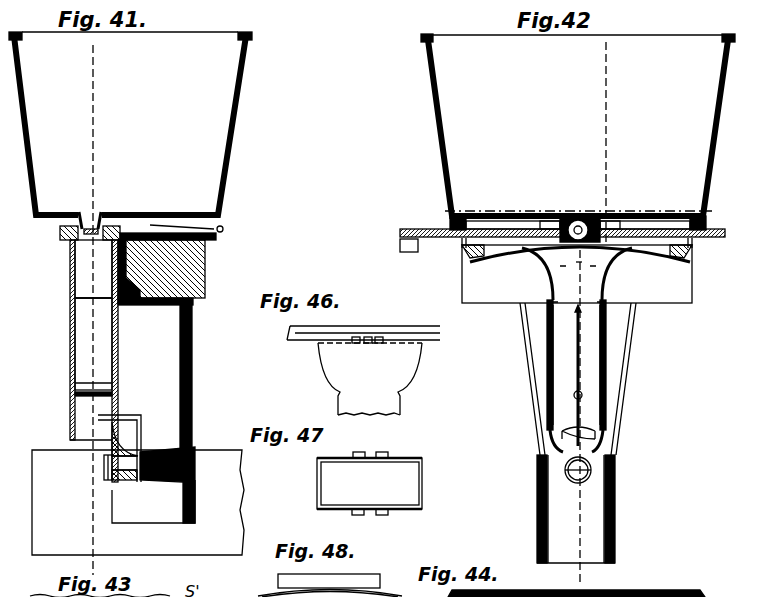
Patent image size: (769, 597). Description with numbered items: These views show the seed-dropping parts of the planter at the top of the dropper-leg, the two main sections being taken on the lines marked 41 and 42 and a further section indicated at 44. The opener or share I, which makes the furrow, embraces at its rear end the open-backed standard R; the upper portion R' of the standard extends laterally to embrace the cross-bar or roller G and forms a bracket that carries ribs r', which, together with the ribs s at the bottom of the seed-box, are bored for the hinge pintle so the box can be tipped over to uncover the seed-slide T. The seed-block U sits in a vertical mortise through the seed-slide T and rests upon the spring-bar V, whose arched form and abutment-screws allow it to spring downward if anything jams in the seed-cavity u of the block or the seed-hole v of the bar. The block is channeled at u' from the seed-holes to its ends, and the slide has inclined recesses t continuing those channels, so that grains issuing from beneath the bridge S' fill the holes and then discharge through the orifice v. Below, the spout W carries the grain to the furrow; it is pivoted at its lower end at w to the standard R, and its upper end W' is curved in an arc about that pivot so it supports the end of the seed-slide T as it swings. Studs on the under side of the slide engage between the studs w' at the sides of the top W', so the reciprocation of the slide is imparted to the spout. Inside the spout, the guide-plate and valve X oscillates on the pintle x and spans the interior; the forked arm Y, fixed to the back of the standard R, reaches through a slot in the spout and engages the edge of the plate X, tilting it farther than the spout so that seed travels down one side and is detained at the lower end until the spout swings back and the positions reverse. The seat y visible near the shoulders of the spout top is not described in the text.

In FIG. 41, the bridge (cap) S' is at (130, 123).
In FIG. 42, the bridge (cap) S' is at (578, 132).
In FIG. 41, the section line 42 42 is at (92, 309).
In FIG. 42, the section line 41 41 is at (594, 312).
In FIG. 42, the section line 44 44 is at (579, 212).
In FIG. 41, the seed-block U is at (91, 226).
In FIG. 41, the seed-slide T is at (60, 230).
In FIG. 42, the seed-slide T is at (725, 233).
In FIG. 46, the seed-slide T is at (363, 323).
In FIG. 41, the seed-cavity (seed-hole) u is at (91, 235).
In FIG. 42, the seed-cavity (seed-hole) u is at (573, 260).
In FIG. 41, the spout W is at (77, 361).
In FIG. 42, the spout W is at (577, 350).
In FIG. 46, the spout W is at (370, 379).
In FIG. 46, the upper end of spout W' is at (380, 351).
In FIG. 47, the upper end of spout W' is at (369, 483).
In FIG. 41, the pivot of spout w is at (95, 467).
In FIG. 42, the pivot of spout w is at (579, 480).
In FIG. 46, the studs at sides of spout top w' is at (367, 347).
In FIG. 47, the studs at sides of spout top w' is at (364, 483).
In FIG. 41, the spring-bar V is at (93, 269).
In FIG. 42, the spring-bar V is at (571, 220).
In FIG. 48, the spring-bar V is at (329, 593).
In FIG. 42, the seed-hole (orifice) of spring-bar v is at (576, 254).
In FIG. 48, the seed-hole (orifice) of spring-bar v is at (329, 574).
In FIG. 41, the ribs of bracket r' is at (185, 227).
In FIG. 41, the bracket (upper portion of standard) R' is at (177, 245).
In FIG. 42, the bracket (upper portion of standard) R' is at (577, 274).
In FIG. 41, the standard R is at (166, 410).
In FIG. 42, the standard R is at (586, 379).
In FIG. 41, the cross-bar or roller G is at (171, 269).
In FIG. 41, the ribs of seed-box s is at (223, 220).
In FIG. 41, the guide-plate and valve X is at (93, 344).
In FIG. 42, the guide-plate and valve X is at (576, 365).
In FIG. 41, the pintle x is at (112, 394).
In FIG. 42, the pintle x is at (583, 396).
In FIG. 41, the forked arm Y is at (127, 448).
In FIG. 42, the forked arm Y is at (578, 375).
In FIG. 42, the shoulders y is at (577, 305).
In FIG. 42, the inclined recesses t is at (578, 228).
In FIG. 42, the channels of seed-block u' is at (579, 228).
In FIG. 41, the openers or shares I is at (138, 502).
In FIG. 42, the openers or shares I is at (585, 509).